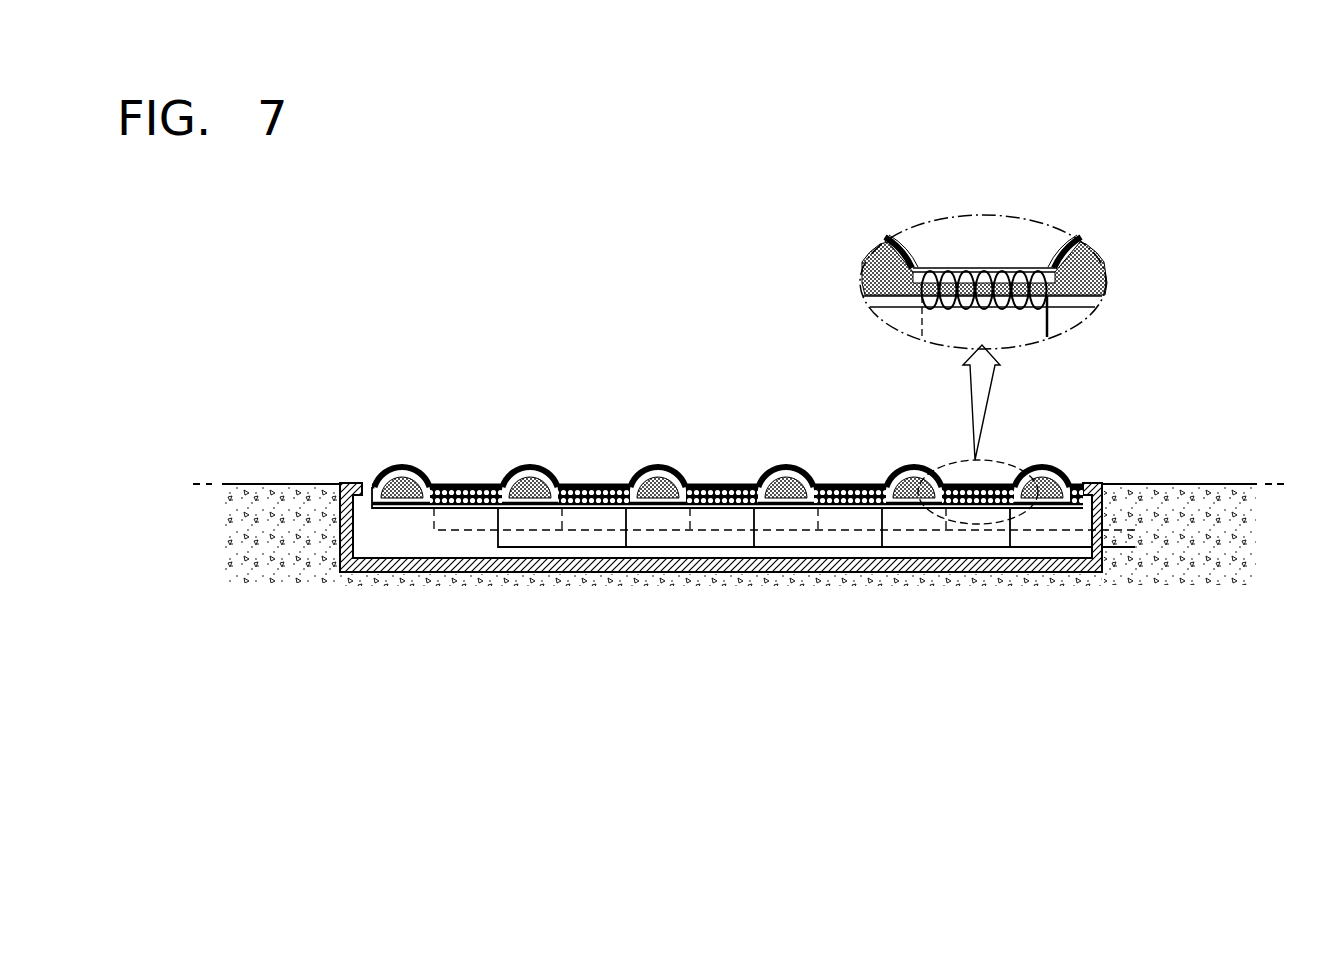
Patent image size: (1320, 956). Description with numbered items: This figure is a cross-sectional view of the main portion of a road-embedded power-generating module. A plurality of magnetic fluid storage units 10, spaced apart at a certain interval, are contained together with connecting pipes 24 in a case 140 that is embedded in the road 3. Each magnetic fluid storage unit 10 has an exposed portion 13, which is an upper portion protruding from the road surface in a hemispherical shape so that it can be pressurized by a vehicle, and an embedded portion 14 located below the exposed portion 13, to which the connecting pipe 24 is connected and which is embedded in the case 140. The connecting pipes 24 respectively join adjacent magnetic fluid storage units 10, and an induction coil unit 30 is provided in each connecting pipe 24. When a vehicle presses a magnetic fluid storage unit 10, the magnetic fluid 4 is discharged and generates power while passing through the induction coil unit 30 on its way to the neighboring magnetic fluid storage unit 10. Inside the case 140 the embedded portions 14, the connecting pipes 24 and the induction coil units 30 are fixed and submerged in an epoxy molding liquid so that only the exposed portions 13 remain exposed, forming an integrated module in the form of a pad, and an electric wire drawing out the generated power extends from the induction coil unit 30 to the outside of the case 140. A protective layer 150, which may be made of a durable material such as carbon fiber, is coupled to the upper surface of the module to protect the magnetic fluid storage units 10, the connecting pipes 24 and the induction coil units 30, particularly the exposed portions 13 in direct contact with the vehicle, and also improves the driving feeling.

The road 3 is at (1192, 484).
The magnetic fluid 4 is at (387, 478).
The magnetic fluid storage unit 10 is at (455, 406).
The exposed portion 13 is at (402, 464).
The embedded portion 14 is at (437, 487).
The connecting pipe 24 is at (1000, 300).
The induction coil unit 30 is at (860, 498).
The case 140 is at (398, 573).
The protective layer 150 is at (722, 486).